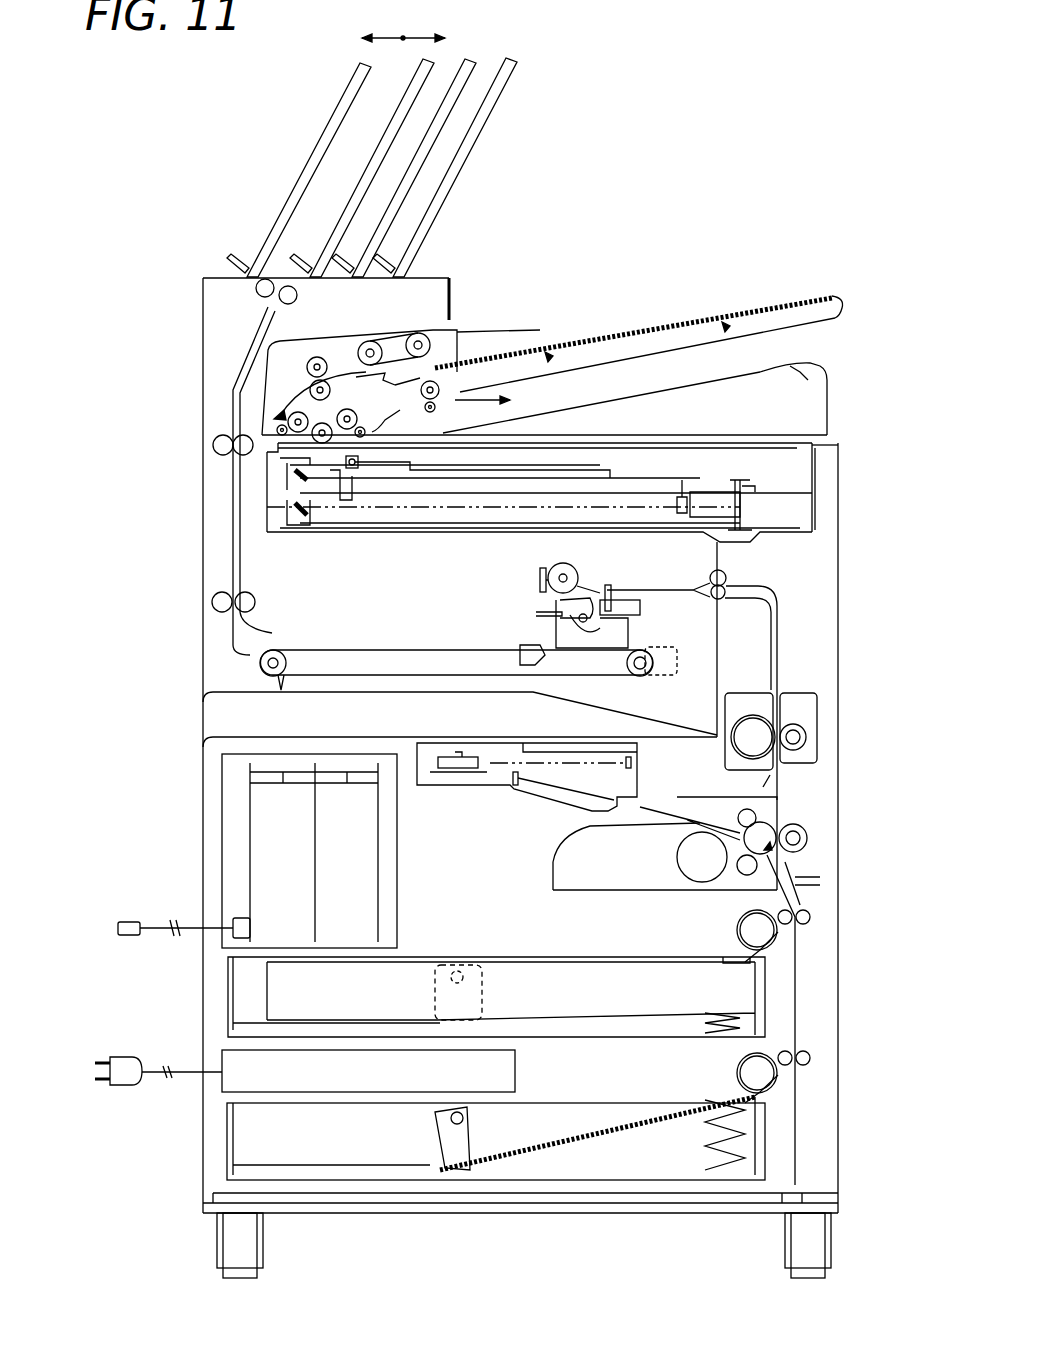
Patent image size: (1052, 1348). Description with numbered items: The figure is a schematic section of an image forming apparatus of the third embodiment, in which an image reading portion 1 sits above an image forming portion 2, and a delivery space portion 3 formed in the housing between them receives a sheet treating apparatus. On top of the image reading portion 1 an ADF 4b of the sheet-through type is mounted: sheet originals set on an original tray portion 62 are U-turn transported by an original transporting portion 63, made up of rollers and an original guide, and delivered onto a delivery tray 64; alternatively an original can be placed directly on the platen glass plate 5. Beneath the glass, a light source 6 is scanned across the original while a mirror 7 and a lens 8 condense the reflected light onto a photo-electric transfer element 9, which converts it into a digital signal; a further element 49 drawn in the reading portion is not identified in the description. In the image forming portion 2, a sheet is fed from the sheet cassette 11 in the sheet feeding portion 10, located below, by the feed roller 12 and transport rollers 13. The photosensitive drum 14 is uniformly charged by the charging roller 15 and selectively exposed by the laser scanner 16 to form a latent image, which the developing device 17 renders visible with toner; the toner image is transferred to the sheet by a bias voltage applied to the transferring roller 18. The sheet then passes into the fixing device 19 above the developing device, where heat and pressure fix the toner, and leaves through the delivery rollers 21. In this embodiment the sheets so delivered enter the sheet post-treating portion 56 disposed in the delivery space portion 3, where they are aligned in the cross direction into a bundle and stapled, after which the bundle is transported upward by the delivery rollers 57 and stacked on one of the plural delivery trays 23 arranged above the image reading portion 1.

The image reading portion 1 is at (528, 478).
The image forming portion 2 is at (207, 833).
The delivery space portion 3 is at (280, 613).
The ADF 4b is at (808, 380).
The platen glass plate 5 is at (592, 453).
The light source 6 is at (360, 500).
The mirror 7 is at (290, 468).
The lens 8 is at (677, 497).
The photo-electric transfer element 9 is at (732, 480).
The sheet feeding portion 10 is at (215, 1152).
The sheet cassette 11 is at (655, 1025).
The feed roller 12 is at (767, 937).
The transport rollers 13 is at (810, 917).
The photosensitive drum 14 is at (768, 826).
The charging roller 15 is at (745, 810).
The laser scanner 16 is at (547, 800).
The developing device 17 is at (742, 872).
The transferring roller 18 is at (808, 838).
The fixing device 19 is at (808, 703).
The delivery rollers 21 is at (728, 574).
The delivery trays 23 is at (492, 118).
The carriage 49 is at (798, 465).
The sheet post-treating portion 56 is at (598, 583).
The delivery rollers 57 is at (258, 287).
The original tray portion 62 is at (757, 322).
The original transporting portion 63 is at (393, 328).
The delivery tray 64 is at (623, 417).